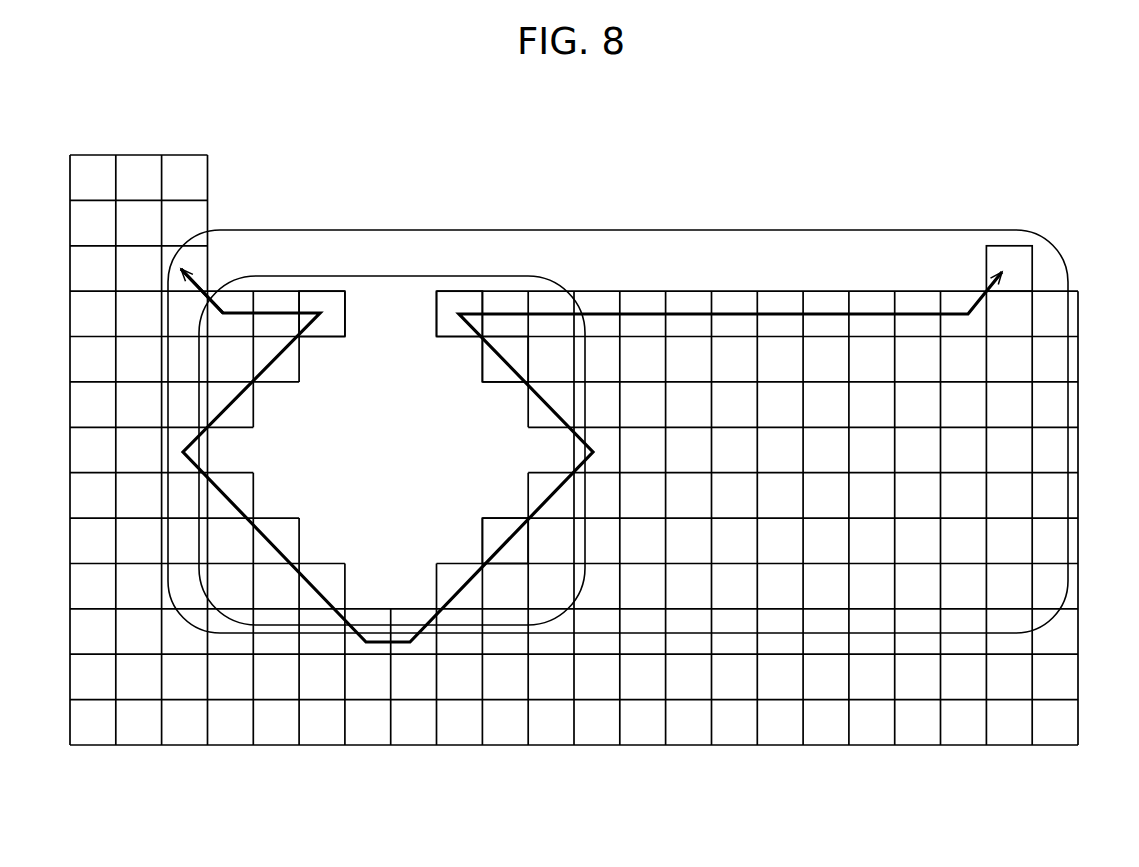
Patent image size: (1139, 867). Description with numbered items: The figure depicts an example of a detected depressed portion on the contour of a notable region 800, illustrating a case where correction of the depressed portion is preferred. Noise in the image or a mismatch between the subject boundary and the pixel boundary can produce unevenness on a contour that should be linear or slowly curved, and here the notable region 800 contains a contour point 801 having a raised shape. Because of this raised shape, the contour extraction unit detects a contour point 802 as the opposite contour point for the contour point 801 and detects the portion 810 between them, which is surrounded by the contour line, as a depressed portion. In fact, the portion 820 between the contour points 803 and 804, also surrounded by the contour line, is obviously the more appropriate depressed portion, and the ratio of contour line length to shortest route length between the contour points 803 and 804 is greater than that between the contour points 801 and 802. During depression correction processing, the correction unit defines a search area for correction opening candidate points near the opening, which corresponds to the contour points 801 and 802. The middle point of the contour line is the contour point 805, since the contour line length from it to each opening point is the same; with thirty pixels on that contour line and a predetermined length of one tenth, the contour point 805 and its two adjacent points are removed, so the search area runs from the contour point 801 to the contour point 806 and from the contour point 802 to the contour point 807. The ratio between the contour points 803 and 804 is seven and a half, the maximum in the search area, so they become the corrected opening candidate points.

The notable region 800 is at (1056, 173).
The contour point 801 is at (1010, 258).
The contour point 802 is at (200, 258).
The contour point 803 is at (446, 304).
The contour point 804 is at (330, 304).
The contour point 805 is at (580, 452).
The contour point 806 is at (493, 369).
The contour point 807 is at (493, 540).
The portion 810 is at (637, 229).
The portion 820 is at (542, 283).